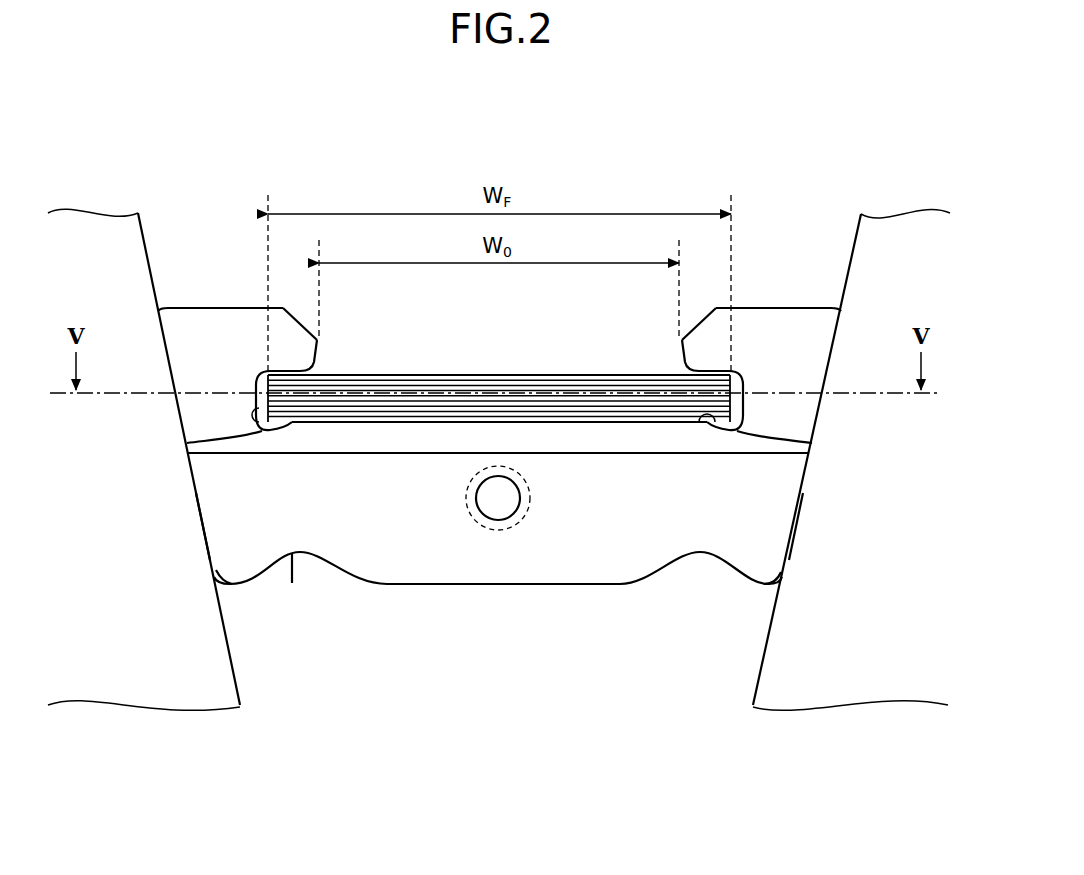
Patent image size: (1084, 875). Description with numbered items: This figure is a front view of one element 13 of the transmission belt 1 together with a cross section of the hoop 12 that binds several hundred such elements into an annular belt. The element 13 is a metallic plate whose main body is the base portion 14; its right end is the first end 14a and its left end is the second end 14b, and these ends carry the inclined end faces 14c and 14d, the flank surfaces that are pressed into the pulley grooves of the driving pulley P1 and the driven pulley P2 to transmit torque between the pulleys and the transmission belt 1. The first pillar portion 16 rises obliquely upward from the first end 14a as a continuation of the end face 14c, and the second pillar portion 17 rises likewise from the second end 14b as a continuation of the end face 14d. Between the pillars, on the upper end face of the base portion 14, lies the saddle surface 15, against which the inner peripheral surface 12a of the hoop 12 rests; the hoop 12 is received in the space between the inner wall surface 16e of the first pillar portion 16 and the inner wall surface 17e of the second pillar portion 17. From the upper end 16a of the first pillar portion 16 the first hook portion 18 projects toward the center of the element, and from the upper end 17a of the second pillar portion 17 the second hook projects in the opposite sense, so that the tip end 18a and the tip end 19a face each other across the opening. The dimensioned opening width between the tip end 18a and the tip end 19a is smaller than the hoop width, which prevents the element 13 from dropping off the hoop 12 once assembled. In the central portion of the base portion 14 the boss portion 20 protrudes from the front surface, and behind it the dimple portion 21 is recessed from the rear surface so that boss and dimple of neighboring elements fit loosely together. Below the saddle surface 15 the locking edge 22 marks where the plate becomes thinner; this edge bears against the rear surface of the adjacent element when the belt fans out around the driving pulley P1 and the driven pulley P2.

The transmission belt 1 is at (622, 166).
The hoop 12 is at (468, 346).
The inner peripheral surface 12a is at (357, 421).
The element 13 is at (201, 288).
The base portion 14 is at (413, 570).
The first end 14a is at (770, 569).
The second end 14b is at (232, 537).
The end face 14c is at (800, 513).
The end face 14d is at (201, 513).
The saddle surface 15 is at (710, 424).
The first pillar portion 16 is at (795, 414).
The upper end 16a is at (823, 323).
The inner wall surface 16e is at (790, 434).
The second pillar portion 17 is at (210, 418).
The upper end 17a is at (179, 323).
The inner wall surface 17e is at (190, 451).
The first hook portion 18 is at (745, 330).
The tip end 18a is at (679, 338).
The tip end 19a is at (253, 330).
The boss portion 20 is at (497, 521).
The dimple portion 21 is at (474, 522).
The locking edge 22 is at (293, 457).
The driving pulley P1 is at (190, 706).
The driven pulley P2 is at (795, 706).